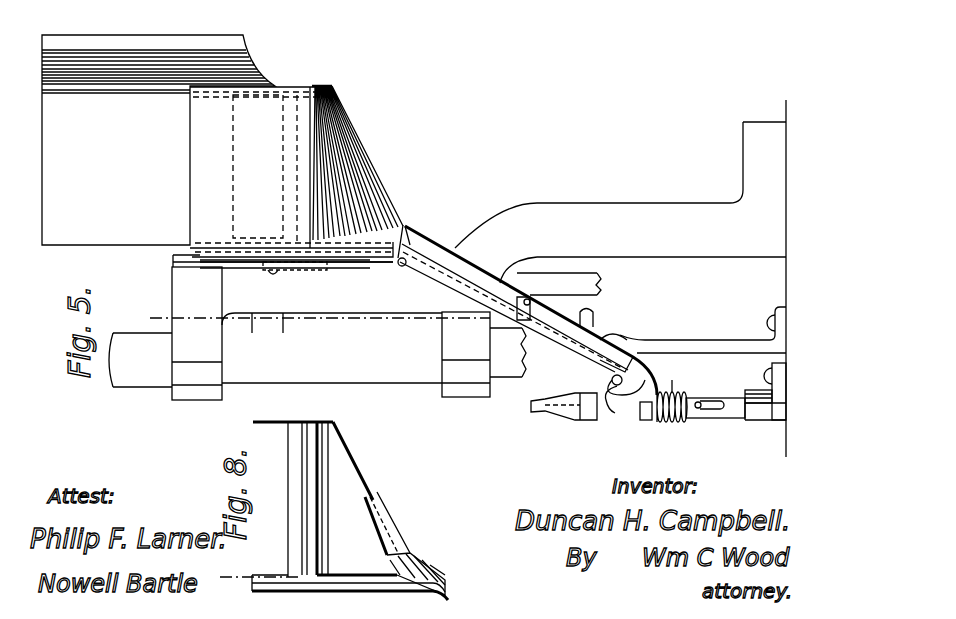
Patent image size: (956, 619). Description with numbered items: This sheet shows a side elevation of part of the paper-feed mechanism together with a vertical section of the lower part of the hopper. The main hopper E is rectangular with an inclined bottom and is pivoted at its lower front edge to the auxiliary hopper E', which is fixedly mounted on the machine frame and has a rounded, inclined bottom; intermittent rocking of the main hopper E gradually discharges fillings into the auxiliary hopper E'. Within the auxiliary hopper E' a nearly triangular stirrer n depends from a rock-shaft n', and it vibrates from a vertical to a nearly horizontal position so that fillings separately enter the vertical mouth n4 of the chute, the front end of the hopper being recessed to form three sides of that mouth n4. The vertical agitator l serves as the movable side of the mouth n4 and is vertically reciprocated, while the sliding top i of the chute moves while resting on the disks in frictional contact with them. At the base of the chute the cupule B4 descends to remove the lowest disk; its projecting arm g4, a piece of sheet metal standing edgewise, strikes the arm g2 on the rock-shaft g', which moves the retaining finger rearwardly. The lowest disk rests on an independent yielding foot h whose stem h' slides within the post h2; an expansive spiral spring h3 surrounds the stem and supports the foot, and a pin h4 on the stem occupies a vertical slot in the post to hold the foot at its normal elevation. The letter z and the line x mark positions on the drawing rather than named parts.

In FIG. 5, the main hopper E is at (158, 140).
In FIG. 5, the auxiliary hopper E' is at (291, 172).
In FIG. 8, the auxiliary hopper E' is at (293, 499).
In FIG. 5, the stop z is at (275, 263).
In FIG. 5, the section line x is at (363, 263).
In FIG. 5, the vertical agitator l is at (405, 226).
In FIG. 5, the sliding top i is at (495, 308).
In FIG. 5, the rock-shaft g' is at (616, 385).
In FIG. 5, the arm g2 is at (615, 413).
In FIG. 5, the projecting arm g4 is at (604, 364).
In FIG. 5, the cupule B4 is at (566, 370).
In FIG. 5, the yielding foot h is at (643, 427).
In FIG. 5, the stem h' is at (672, 422).
In FIG. 5, the post h2 is at (742, 418).
In FIG. 5, the expansive spiral spring h3 is at (673, 382).
In FIG. 5, the pin h4 is at (700, 397).
In FIG. 8, the stirrer n is at (389, 508).
In FIG. 8, the rock-shaft n' is at (344, 498).
In FIG. 8, the mouth n4 is at (334, 576).